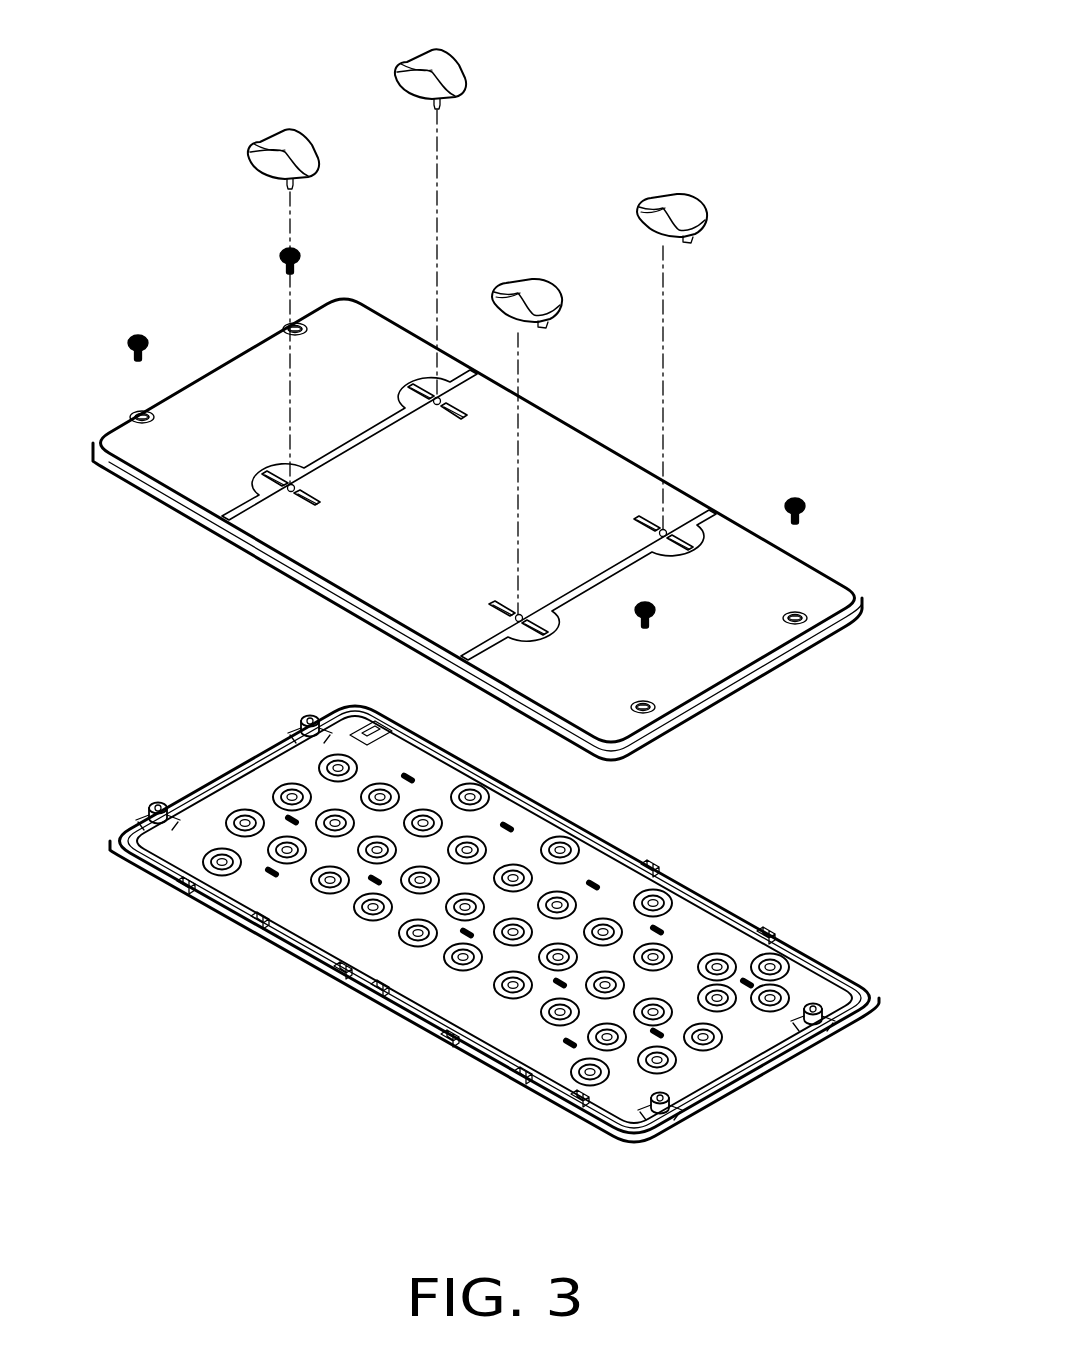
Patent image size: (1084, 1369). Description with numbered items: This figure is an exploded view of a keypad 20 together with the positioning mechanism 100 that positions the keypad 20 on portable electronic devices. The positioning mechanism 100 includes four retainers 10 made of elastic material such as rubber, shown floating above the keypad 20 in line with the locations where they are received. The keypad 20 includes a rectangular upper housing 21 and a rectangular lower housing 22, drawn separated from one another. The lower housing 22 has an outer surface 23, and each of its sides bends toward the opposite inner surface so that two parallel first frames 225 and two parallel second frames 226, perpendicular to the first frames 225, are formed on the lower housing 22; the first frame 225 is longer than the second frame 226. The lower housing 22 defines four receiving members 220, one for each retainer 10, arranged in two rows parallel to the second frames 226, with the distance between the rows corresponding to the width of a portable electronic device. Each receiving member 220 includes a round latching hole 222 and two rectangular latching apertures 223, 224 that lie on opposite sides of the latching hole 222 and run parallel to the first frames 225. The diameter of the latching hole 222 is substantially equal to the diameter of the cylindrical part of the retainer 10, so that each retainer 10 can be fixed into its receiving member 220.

The positioning mechanism 100 is at (760, 167).
The retainer 10 is at (675, 210).
The keypad 20 is at (880, 737).
The lower housing 22 is at (492, 520).
The upper housing 21 is at (698, 937).
The outer surface 23 is at (767, 597).
The first frame 225 is at (307, 577).
The second frame 226 is at (207, 372).
The receiving member 220 is at (557, 515).
The latching hole 222 is at (665, 536).
The latching aperture 223 is at (652, 527).
The latching aperture 224 is at (674, 546).